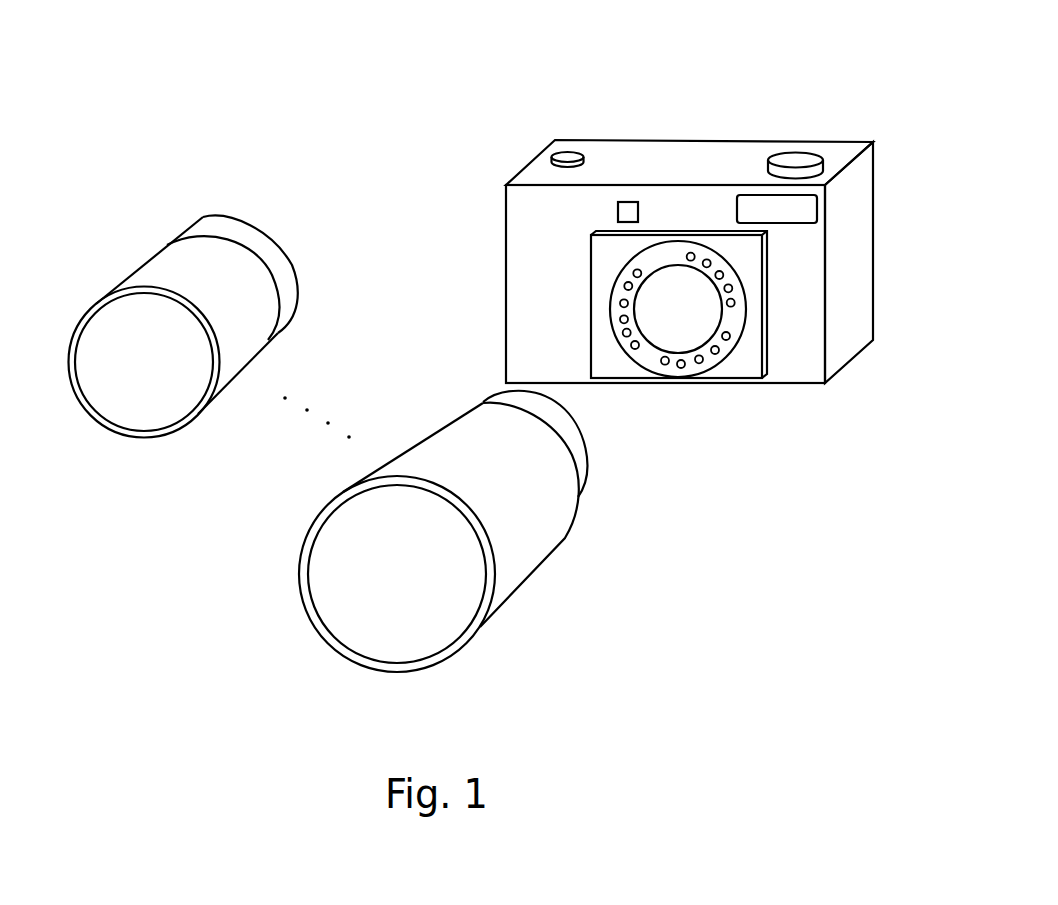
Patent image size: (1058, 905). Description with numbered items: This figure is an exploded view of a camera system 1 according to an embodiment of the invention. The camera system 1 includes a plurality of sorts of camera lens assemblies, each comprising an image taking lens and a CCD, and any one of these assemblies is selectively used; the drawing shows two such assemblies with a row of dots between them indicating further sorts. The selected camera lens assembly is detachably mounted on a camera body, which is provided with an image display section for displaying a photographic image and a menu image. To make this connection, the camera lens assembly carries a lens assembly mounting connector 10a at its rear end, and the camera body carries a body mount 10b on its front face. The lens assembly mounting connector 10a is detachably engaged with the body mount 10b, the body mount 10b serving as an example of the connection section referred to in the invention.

The camera system 1 is at (712, 97).
The lens assembly mounting connector 10a is at (588, 436).
The body mount 10b is at (699, 360).